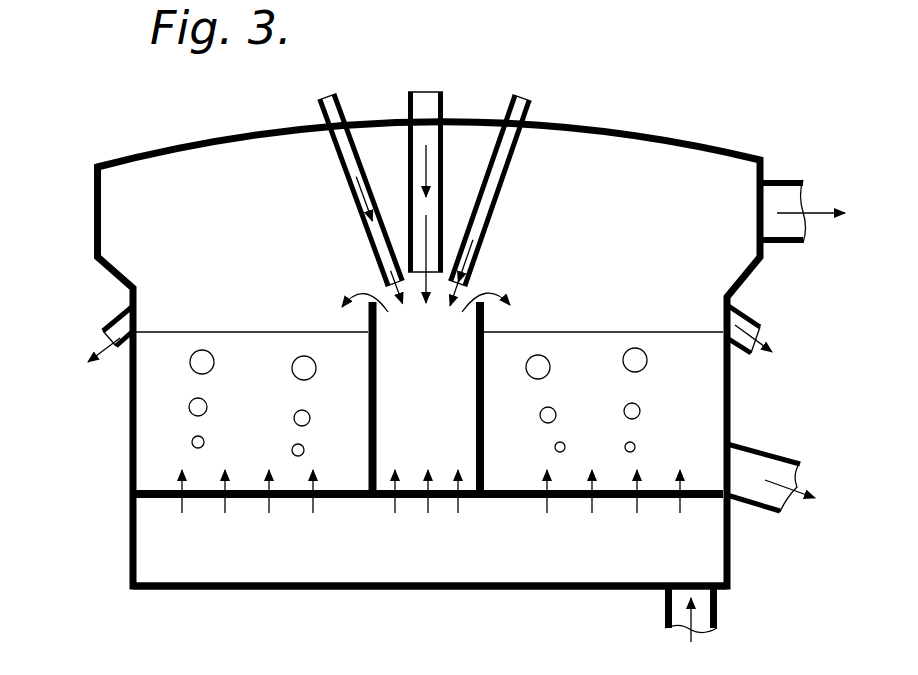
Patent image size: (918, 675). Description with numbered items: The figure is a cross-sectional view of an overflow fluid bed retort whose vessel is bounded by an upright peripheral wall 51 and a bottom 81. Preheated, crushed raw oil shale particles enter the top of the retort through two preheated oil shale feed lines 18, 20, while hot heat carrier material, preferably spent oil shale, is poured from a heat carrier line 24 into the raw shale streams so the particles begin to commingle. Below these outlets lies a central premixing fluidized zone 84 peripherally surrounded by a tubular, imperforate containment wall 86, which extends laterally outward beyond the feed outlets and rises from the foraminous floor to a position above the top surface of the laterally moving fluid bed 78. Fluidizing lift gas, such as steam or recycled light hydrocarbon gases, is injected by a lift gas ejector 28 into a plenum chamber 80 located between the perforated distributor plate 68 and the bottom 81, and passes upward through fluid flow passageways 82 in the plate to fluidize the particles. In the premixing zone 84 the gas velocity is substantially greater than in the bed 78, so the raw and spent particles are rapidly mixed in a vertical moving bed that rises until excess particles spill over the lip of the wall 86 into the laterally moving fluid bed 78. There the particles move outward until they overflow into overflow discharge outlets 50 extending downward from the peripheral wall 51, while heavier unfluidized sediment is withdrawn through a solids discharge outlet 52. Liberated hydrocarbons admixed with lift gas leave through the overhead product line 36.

The preheated oil shale feed line 18 is at (318, 100).
The preheated oil shale feed line 20 is at (535, 108).
The heat carrier line 24 is at (445, 108).
The lift gas ejector 28 is at (665, 608).
The product line 36 is at (783, 180).
The overflow discharge outlet 50 is at (126, 340).
The upright peripheral wall 51 is at (95, 212).
The solids discharge outlet 52 is at (760, 458).
The perforated distributor plate 68 is at (348, 490).
The laterally moving fluid bed 78 is at (640, 332).
The plenum chamber 80 is at (440, 553).
The bottom 81 is at (420, 590).
The fluid flow passageways 82 is at (553, 500).
The central premixing fluidized zone 84 is at (442, 395).
The tubular containment wall 86 is at (485, 362).